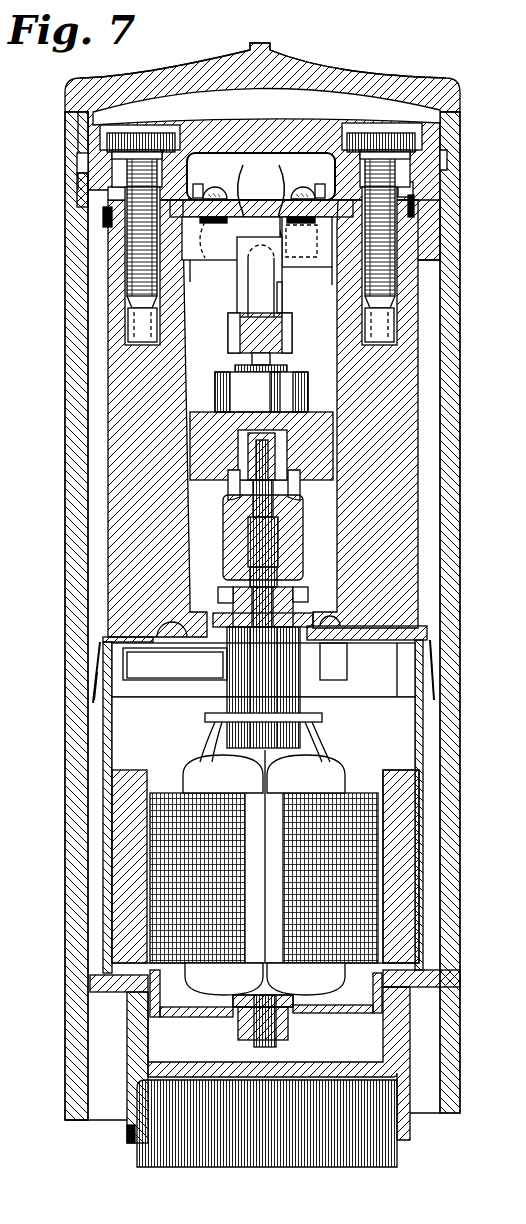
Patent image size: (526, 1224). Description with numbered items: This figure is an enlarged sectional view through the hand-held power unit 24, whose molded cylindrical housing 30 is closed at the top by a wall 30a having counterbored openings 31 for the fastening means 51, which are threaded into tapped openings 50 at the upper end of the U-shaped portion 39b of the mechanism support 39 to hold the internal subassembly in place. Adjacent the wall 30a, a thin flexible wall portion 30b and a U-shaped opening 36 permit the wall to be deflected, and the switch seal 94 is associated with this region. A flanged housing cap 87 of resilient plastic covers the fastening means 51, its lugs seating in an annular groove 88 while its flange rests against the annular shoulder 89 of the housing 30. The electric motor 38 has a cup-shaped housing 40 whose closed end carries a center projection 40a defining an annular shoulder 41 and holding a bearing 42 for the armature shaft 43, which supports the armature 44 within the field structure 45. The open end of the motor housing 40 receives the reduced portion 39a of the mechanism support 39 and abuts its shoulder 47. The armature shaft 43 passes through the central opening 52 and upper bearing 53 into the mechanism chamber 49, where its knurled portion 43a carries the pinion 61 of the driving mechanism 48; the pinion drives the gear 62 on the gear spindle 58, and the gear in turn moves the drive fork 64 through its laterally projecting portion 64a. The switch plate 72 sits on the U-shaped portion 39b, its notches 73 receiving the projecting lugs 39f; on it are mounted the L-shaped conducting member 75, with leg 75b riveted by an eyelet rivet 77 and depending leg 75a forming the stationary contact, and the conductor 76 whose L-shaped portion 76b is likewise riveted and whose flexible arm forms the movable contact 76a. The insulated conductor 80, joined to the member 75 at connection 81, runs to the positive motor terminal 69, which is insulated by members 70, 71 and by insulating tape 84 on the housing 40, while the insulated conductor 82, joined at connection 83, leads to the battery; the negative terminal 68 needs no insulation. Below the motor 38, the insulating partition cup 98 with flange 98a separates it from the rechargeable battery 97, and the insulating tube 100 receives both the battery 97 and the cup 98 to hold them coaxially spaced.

The power unit 24 is at (464, 435).
The housing 30 is at (460, 500).
The wall 30a is at (231, 109).
The flexible wall portion 30b is at (242, 314).
The counterbored openings 31 is at (128, 159).
The U-shaped opening 36 is at (250, 294).
The electric motor 38 is at (432, 788).
The mechanism support 39 is at (99, 572).
The portion of reduced cross section 39a is at (115, 700).
The U-shaped portion 39b is at (418, 331).
The projecting lugs 39f is at (110, 195).
The motor housing 40 is at (420, 833).
The center projection 40a is at (327, 1008).
The annular shoulder 41 is at (420, 978).
The bearing 42 is at (288, 1038).
The armature shaft 43 is at (250, 1040).
The knurled portion 43a is at (242, 530).
The motor armature 44 is at (354, 795).
The field structure 45 is at (125, 875).
The shoulder 47 is at (104, 659).
The driving mechanism 48 is at (194, 496).
The mechanism chamber 49 is at (328, 376).
The tapped openings 50 is at (130, 265).
The fastening means 51 is at (140, 138).
The central opening 52 is at (299, 590).
The upper bearing 53 is at (224, 602).
The gear spindle 58 is at (272, 358).
The pinion 61 is at (300, 503).
The gear 62 is at (203, 413).
The drive fork 64 is at (302, 328).
The laterally projecting portion 64a is at (291, 340).
The negative motor terminal 68 is at (95, 682).
The positive motor terminal 69 is at (436, 676).
The insulating member 70 is at (430, 628).
The insulating member 71 is at (388, 656).
The switch plate 72 is at (261, 177).
The notches 73 is at (104, 220).
The L-shaped conducting member 75 is at (275, 195).
The stationary switch contact 75a is at (336, 272).
The leg 75b is at (307, 242).
The conductor 76 is at (246, 206).
The movable switch contact 76a is at (197, 279).
The L-shaped portion 76b is at (231, 240).
The eyelet rivet 77 is at (214, 235).
The insulated conductor 80 is at (318, 190).
The connection 81 is at (316, 186).
The insulated conductor 82 is at (201, 180).
The connection 83 is at (216, 190).
The insulating tape 84 is at (425, 730).
The housing cap 87 is at (316, 44).
The annular groove 88 is at (80, 161).
The annular shoulder 89 is at (80, 182).
The switch seal 94 is at (281, 288).
The rechargeable battery 97 is at (137, 1160).
The partition cup 98 is at (400, 1027).
The flange 98a is at (440, 995).
The insulating tube 100 is at (125, 1128).